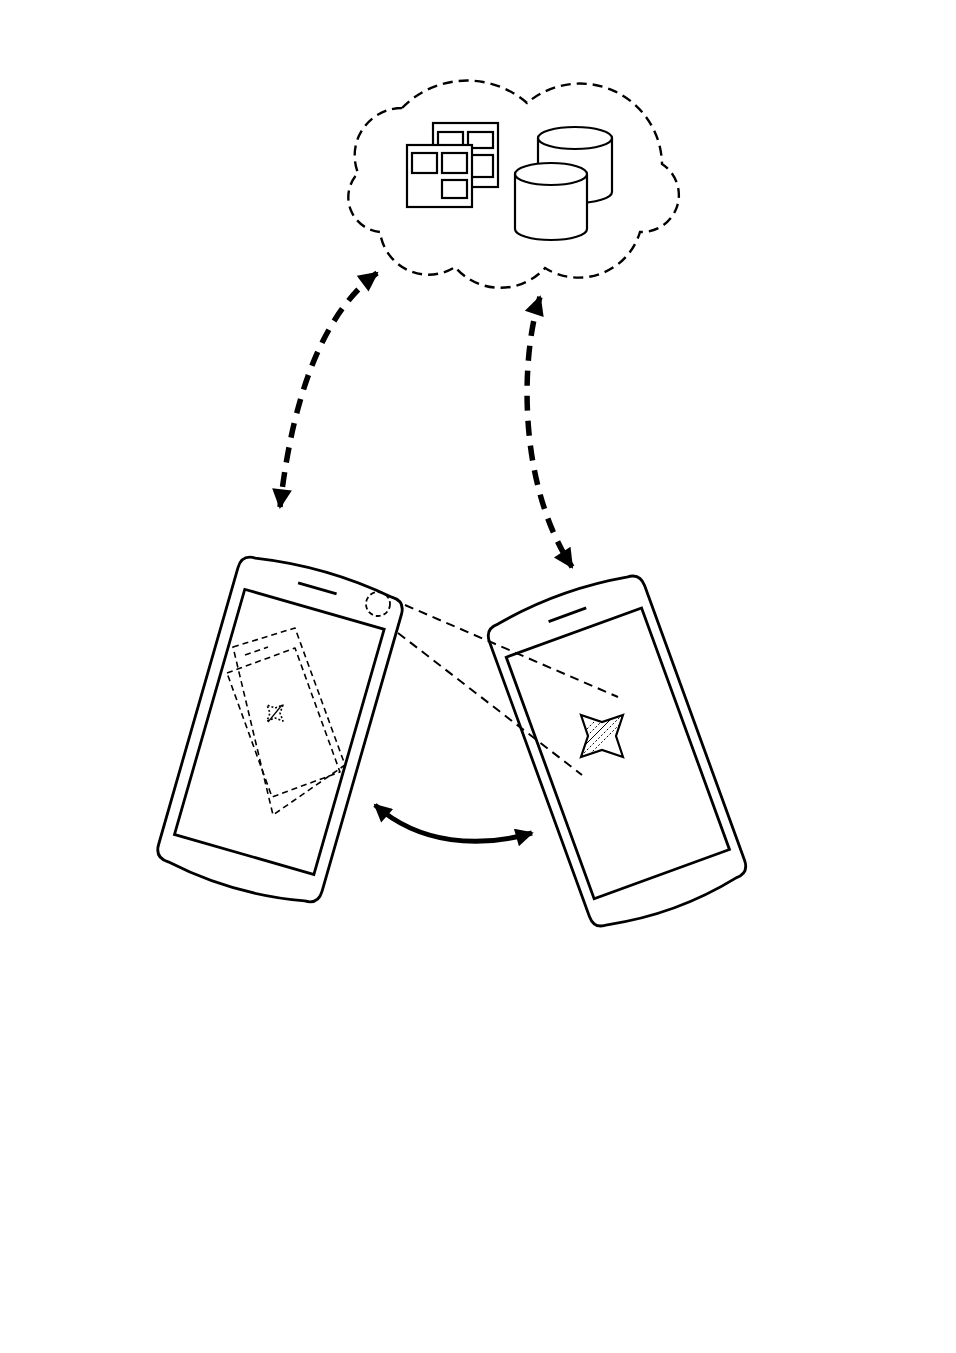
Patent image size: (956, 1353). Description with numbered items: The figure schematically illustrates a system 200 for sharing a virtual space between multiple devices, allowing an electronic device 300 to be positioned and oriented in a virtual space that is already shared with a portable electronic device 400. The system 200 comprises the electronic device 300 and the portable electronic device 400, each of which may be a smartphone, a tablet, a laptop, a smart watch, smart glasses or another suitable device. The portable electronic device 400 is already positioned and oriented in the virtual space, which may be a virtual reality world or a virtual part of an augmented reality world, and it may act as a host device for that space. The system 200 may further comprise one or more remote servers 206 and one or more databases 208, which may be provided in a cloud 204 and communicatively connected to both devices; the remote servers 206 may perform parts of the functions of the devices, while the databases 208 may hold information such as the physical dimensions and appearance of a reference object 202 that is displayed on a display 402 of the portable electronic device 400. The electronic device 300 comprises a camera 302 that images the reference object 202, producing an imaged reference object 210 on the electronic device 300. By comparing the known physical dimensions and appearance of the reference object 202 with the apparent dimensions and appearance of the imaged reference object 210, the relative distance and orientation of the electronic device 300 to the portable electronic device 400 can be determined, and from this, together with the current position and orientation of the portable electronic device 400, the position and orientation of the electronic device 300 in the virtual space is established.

The system 200 is at (144, 241).
The cloud 204 is at (668, 146).
The remote servers 206 is at (418, 128).
The databases 208 is at (527, 151).
The electronic device 300 is at (240, 570).
The camera 302 is at (384, 592).
The imaged reference object 210 is at (268, 715).
The portable electronic device 400 is at (643, 572).
The display 402 is at (705, 777).
The reference object 202 is at (620, 733).